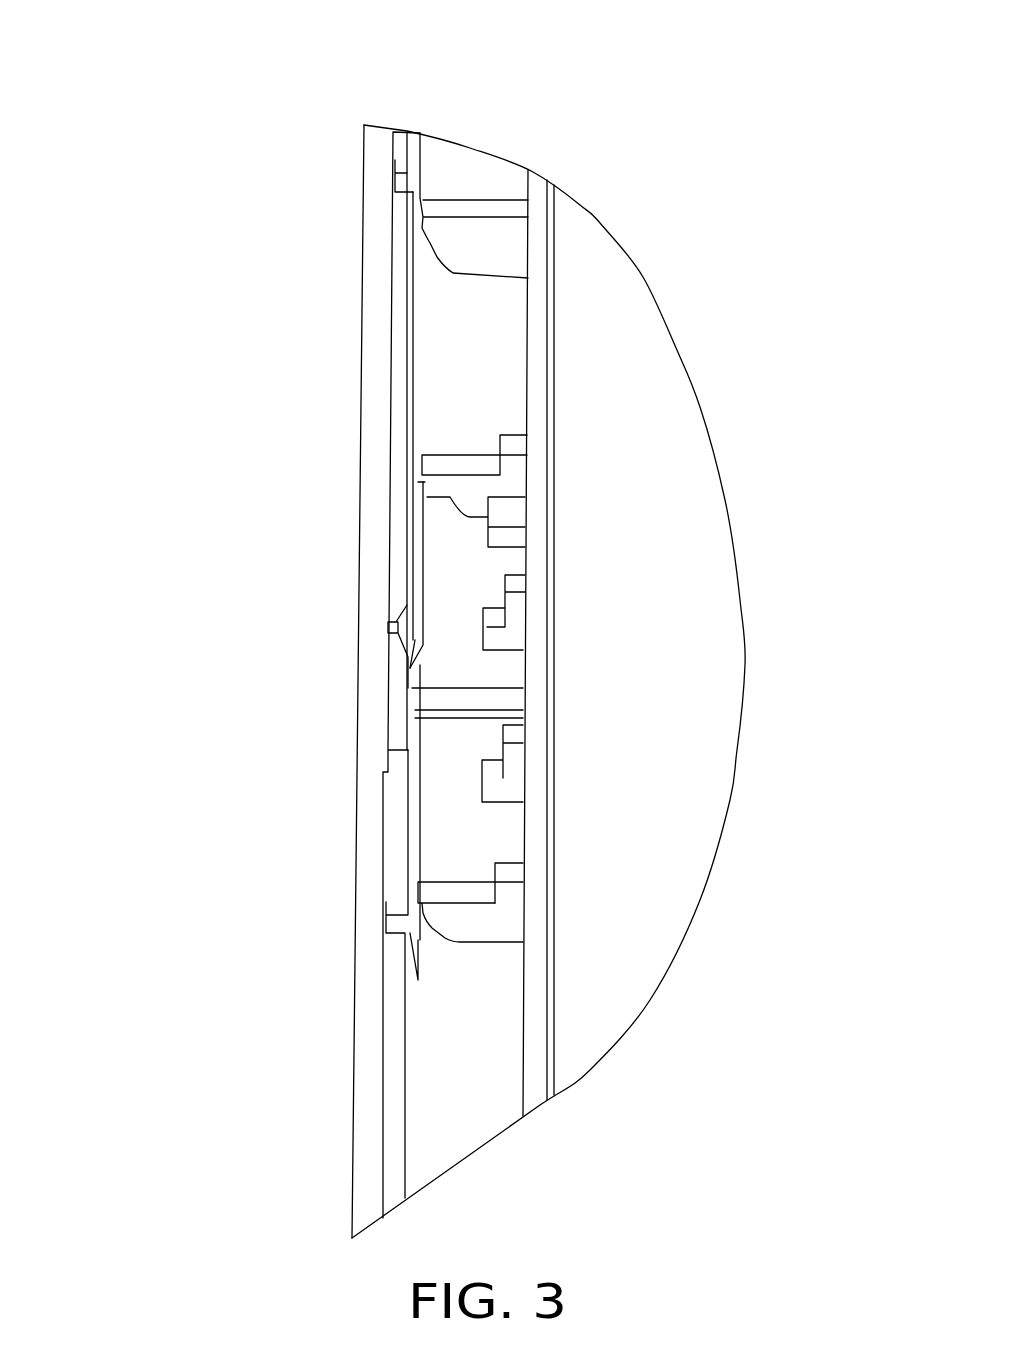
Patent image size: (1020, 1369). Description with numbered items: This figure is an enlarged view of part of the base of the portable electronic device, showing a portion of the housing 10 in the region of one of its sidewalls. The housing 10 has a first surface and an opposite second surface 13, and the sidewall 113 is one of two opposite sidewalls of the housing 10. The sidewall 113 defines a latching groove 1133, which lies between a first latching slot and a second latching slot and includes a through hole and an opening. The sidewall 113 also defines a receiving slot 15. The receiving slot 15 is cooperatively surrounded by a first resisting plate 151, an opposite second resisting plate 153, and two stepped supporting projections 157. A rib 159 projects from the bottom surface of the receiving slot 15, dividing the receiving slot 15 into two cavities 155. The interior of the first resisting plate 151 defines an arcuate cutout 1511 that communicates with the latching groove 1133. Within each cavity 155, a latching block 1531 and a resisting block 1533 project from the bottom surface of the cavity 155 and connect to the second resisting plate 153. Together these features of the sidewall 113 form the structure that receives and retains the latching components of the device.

The housing 10 is at (172, 55).
The second surface 13 is at (637, 398).
The sidewall 113 is at (375, 173).
The latching groove 1133 is at (420, 530).
The receiving slot 15 is at (440, 489).
The first resisting plate 151 is at (402, 582).
The arcuate cutout 1511 is at (403, 633).
The second resisting plate 153 is at (540, 678).
The latching block 1531 is at (500, 615).
The resisting block 1533 is at (505, 518).
The cavity 155 is at (467, 588).
The stepped supporting projection 157 is at (490, 468).
The rib 159 is at (480, 707).